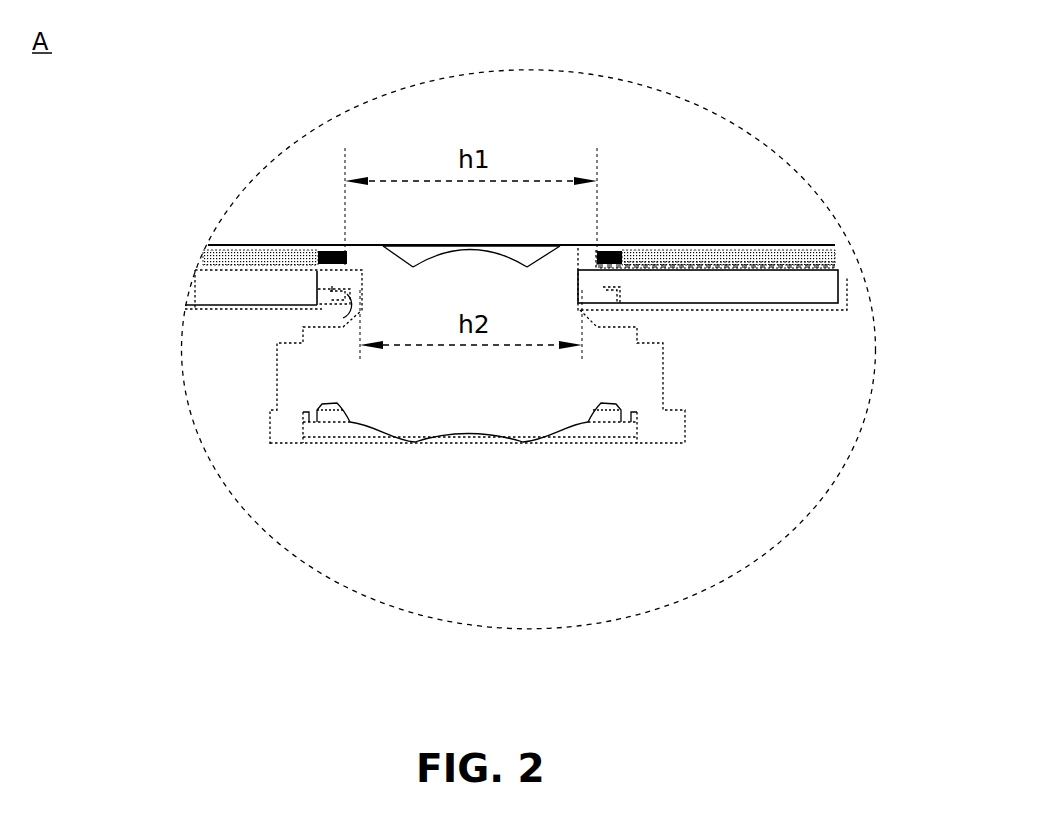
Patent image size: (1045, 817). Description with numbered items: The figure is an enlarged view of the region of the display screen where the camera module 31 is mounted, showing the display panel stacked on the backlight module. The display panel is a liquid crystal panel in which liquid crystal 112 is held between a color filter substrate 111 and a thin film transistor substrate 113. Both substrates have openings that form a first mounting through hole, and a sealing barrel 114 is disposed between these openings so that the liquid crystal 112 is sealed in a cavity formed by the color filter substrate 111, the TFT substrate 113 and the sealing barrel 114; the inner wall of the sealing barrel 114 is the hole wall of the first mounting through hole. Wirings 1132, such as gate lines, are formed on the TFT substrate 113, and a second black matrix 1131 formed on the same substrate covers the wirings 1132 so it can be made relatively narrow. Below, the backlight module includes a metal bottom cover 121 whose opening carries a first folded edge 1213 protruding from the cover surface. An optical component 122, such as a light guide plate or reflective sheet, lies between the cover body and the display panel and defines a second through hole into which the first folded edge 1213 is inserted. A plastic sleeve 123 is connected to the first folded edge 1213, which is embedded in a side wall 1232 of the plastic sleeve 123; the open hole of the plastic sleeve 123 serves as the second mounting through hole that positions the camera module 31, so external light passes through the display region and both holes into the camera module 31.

The color filter substrate 111 is at (815, 247).
The liquid crystal 112 is at (812, 258).
The thin film transistor substrate 113 is at (840, 268).
The second black matrix 1131 is at (703, 263).
The wirings 1132 is at (703, 265).
The sealing barrel 114 is at (327, 249).
The metal bottom cover 121 is at (200, 312).
The optical component 122 is at (252, 283).
The plastic sleeve 123 is at (312, 290).
The first folded edge 1213 is at (330, 290).
The side wall 1232 is at (343, 313).
The camera module 31 is at (337, 378).